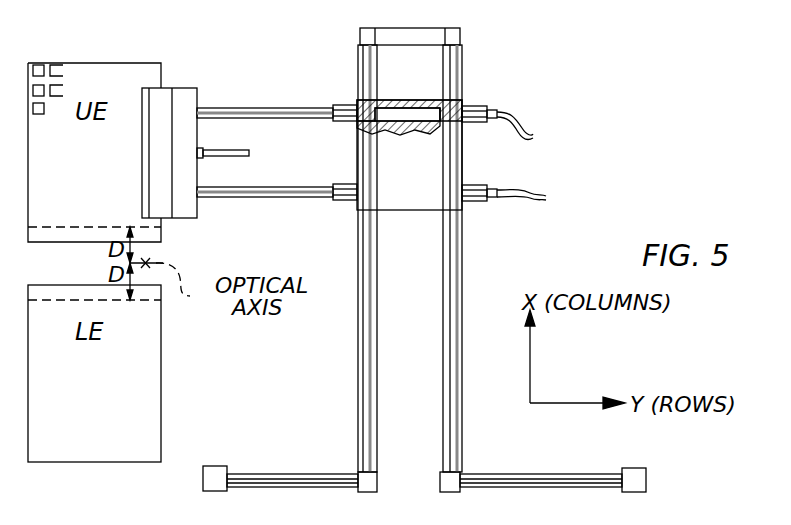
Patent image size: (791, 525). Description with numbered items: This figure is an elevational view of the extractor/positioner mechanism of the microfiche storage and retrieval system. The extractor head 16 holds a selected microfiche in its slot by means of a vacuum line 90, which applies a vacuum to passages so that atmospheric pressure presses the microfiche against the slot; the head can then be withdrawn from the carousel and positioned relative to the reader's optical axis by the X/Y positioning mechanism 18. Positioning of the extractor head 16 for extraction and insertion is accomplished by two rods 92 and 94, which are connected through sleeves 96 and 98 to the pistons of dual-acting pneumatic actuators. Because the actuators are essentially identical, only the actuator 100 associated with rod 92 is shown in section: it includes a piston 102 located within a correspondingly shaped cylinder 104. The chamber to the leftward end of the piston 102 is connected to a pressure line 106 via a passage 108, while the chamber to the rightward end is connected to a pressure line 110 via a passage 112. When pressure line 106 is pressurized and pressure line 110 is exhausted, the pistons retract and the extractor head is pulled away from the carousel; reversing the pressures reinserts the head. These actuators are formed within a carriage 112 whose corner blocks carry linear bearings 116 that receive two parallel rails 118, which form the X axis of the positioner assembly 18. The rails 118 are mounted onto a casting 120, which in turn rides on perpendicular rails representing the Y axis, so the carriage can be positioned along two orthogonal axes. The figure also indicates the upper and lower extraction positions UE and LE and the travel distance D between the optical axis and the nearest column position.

The extractor head 16 is at (166, 88).
The X/Y positioning mechanism 18 is at (544, 176).
The vacuum line 90 is at (249, 156).
The rod 92 is at (272, 92).
The rod 94 is at (270, 197).
The sleeve 96 is at (348, 106).
The sleeve 98 is at (342, 200).
The actuator 100 is at (430, 114).
The piston 102 is at (375, 104).
The cylinder 104 is at (440, 110).
The pressure line 106 is at (536, 202).
The passage 108 is at (358, 128).
The pressure line 110 is at (531, 134).
The passage / carriage 112 is at (428, 128).
The linear bearing 116 is at (558, 488).
The rail 118 is at (445, 405).
The casting 120 is at (462, 431).